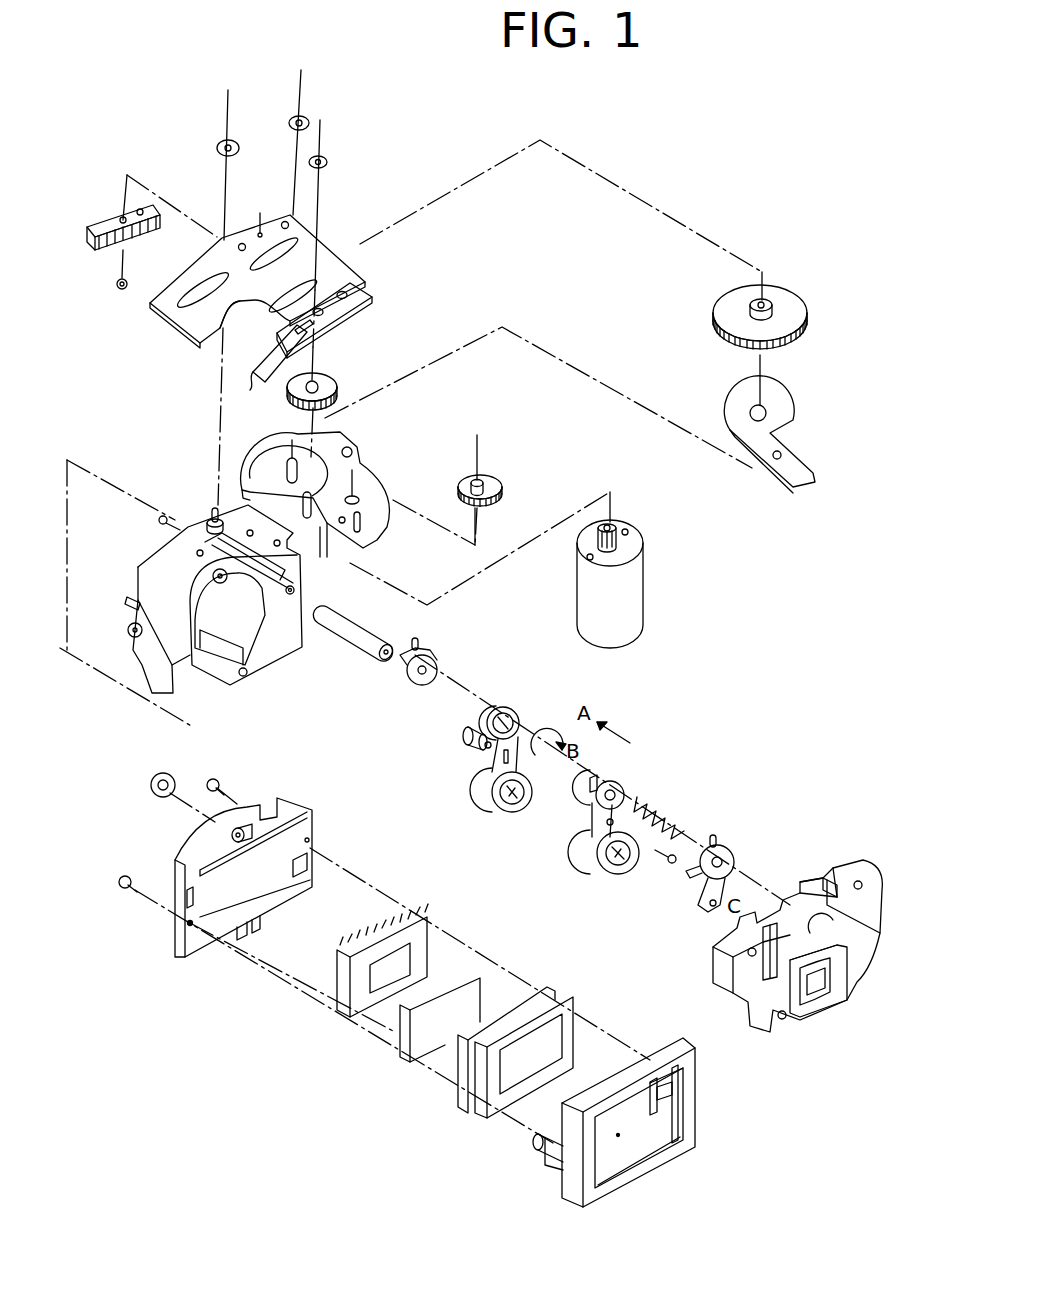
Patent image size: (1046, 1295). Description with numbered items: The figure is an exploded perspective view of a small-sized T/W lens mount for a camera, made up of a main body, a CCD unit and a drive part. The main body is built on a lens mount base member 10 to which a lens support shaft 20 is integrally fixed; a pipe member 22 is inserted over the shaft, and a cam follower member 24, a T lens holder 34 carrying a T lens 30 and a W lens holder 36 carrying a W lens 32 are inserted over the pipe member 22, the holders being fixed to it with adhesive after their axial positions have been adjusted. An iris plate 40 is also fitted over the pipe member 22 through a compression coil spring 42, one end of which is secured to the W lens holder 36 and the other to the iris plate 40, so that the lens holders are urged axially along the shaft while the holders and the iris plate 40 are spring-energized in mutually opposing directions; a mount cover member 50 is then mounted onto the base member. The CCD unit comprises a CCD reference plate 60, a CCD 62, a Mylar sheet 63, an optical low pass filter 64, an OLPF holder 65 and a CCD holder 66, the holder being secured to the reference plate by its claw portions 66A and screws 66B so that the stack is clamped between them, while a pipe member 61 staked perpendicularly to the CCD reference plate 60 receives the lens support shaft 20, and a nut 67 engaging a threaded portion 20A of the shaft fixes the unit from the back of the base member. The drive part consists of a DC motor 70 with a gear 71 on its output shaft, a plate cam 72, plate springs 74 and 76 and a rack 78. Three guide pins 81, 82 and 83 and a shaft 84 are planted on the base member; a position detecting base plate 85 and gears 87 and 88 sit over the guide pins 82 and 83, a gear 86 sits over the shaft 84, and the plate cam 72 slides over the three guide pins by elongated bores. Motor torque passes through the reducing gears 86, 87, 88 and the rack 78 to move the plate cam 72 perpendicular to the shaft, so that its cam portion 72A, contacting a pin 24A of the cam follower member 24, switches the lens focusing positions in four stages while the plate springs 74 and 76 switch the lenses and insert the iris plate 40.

The lens mount base member 10 is at (207, 677).
The lens support shaft 20 is at (274, 640).
The threaded portion 20A is at (159, 522).
The pipe member 22 is at (341, 632).
The cam follower member 24 is at (410, 678).
The pin 24A is at (425, 648).
The T lens 30 is at (512, 812).
The W lens 32 is at (620, 874).
The T lens holder 34 is at (472, 787).
The W lens holder 36 is at (568, 863).
The iris plate 40 is at (735, 855).
The compression coil spring 42 is at (665, 818).
The mount cover member 50 is at (868, 897).
The CCD reference plate 60 is at (313, 823).
The pipe member 61 is at (280, 803).
The CCD 62 is at (422, 917).
The Mylar sheet 63 is at (465, 970).
The optical low pass filter 64 is at (508, 987).
The OLPF holder 65 is at (562, 1003).
The CCD holder 66 is at (697, 1071).
The claw portions 66A is at (535, 1150).
The screws 66B is at (215, 782).
The nut 67 is at (152, 783).
The DC motor 70 is at (630, 597).
The gear 71 is at (630, 537).
The plate cam 72 is at (330, 247).
The cam portion 72A is at (226, 335).
The plate spring 74 is at (317, 345).
The plate spring 76 is at (277, 353).
The rack 78 is at (94, 250).
The guide pin 81 is at (210, 517).
The guide pin 82 is at (300, 500).
The guide pin 83 is at (280, 468).
The shaft 84 is at (363, 527).
The position detecting base plate 85 is at (780, 407).
The gear 86 is at (500, 487).
The gear 87 is at (337, 385).
The gear 88 is at (790, 307).